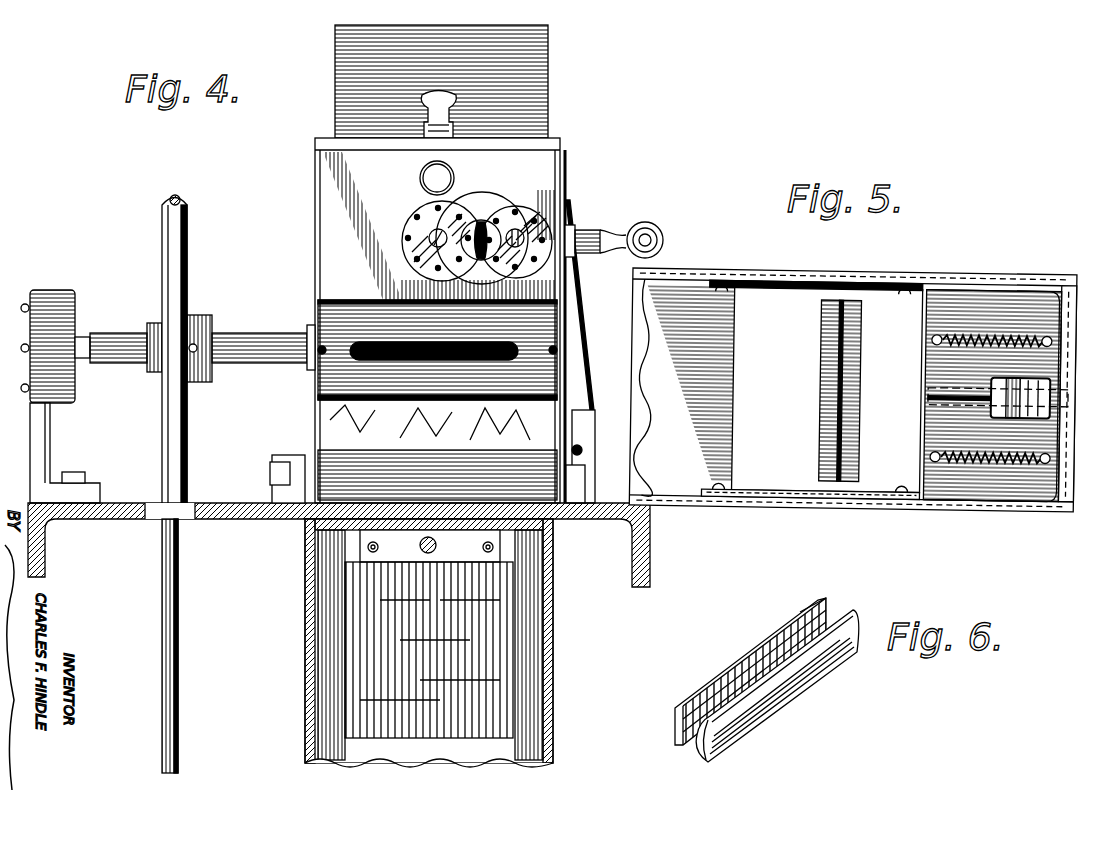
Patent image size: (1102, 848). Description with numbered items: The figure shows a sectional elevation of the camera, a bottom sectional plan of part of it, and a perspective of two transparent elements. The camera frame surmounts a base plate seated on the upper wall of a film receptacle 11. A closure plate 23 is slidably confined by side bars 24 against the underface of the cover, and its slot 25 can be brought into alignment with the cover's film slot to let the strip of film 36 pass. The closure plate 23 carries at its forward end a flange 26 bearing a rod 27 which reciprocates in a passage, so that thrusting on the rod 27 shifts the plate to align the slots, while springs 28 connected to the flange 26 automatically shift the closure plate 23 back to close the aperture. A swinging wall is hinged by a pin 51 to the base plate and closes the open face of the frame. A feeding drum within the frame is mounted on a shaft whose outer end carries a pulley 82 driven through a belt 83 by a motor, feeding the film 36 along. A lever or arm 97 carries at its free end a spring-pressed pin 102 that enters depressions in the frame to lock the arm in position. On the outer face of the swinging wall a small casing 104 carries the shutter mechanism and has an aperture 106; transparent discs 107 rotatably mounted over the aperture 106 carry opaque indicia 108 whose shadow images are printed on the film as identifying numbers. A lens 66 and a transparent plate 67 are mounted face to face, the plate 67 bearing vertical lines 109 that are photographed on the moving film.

In FIG. 5, the film receptacle 11 is at (1068, 492).
In FIG. 5, the closure plate 23 is at (827, 390).
In FIG. 5, the side bars 24 is at (795, 281).
In FIG. 5, the slot 25 is at (822, 440).
In FIG. 5, the flange 26 is at (930, 423).
In FIG. 4, the rod 27 is at (428, 537).
In FIG. 5, the rod 27 is at (945, 390).
In FIG. 4, the springs 28 is at (368, 551).
In FIG. 5, the springs 28 is at (995, 333).
In FIG. 4, the strip of film 36 is at (360, 700).
In FIG. 5, the strip of film 36 is at (845, 465).
In FIG. 4, the pin 51 is at (300, 458).
In FIG. 6, the lens 66 is at (768, 705).
In FIG. 6, the transparent plate 67 is at (752, 650).
In FIG. 4, the pulley 82 is at (185, 280).
In FIG. 4, the belt 83 is at (178, 605).
In FIG. 4, the lever or arm 97 is at (588, 320).
In FIG. 4, the pin 102 is at (645, 230).
In FIG. 4, the casing 104 is at (493, 194).
In FIG. 4, the aperture 106 is at (473, 220).
In FIG. 4, the discs 107 is at (517, 208).
In FIG. 4, the opaque indicia 108 is at (540, 227).
In FIG. 6, the vertical lines 109 is at (828, 610).